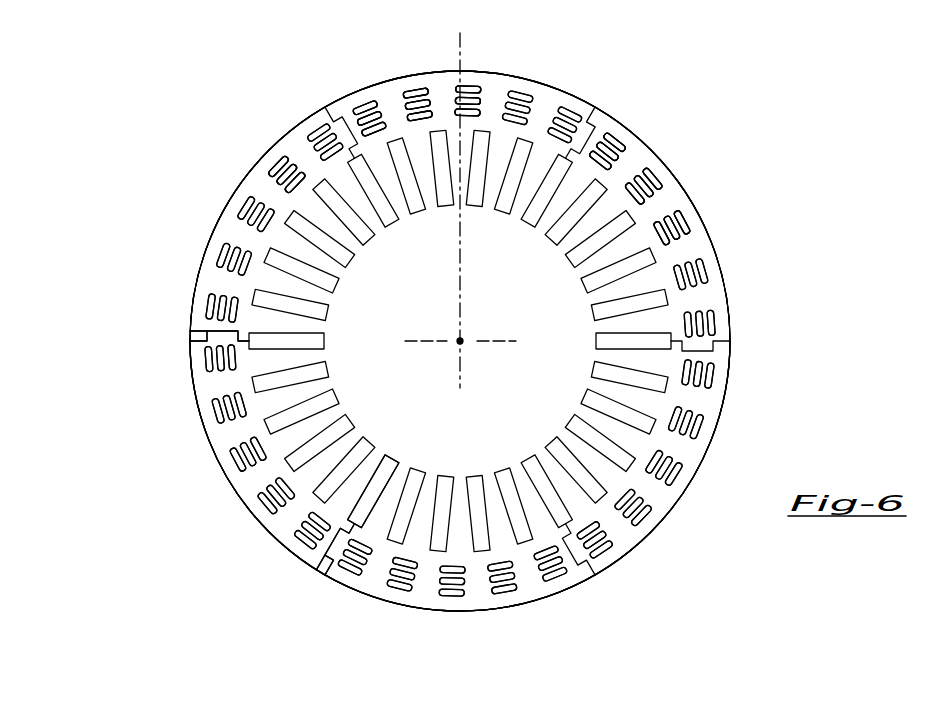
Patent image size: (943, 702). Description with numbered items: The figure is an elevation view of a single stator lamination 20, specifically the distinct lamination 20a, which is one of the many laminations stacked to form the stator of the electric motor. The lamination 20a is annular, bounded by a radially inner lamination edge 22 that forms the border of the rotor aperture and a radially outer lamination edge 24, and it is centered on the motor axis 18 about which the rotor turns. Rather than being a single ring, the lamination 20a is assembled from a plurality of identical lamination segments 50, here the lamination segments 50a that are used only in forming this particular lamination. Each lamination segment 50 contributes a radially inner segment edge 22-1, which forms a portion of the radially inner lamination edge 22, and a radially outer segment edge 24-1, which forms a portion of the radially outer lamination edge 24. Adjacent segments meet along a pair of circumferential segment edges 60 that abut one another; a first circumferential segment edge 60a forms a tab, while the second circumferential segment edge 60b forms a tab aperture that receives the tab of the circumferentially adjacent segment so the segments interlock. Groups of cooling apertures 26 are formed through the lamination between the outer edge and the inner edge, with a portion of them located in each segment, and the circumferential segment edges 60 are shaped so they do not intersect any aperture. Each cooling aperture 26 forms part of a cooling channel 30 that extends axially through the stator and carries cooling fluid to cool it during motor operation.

The motor axis 18 is at (461, 340).
The lamination 20 is at (640, 57).
The lamination 20a is at (630, 550).
The radially inner lamination edge 22 is at (330, 383).
The radially inner segment edge 22-1 is at (402, 460).
The radially outer lamination edge 24 is at (540, 606).
The radially outer segment edge 24-1 is at (200, 425).
The cooling apertures 26 is at (620, 147).
The cooling channel 30 is at (470, 88).
The lamination segments 50 is at (435, 90).
The lamination segments 50a is at (460, 341).
The circumferential segment edges 60 is at (272, 453).
The first circumferential segment edge 60a is at (195, 343).
The second circumferential segment edge 60b is at (205, 330).